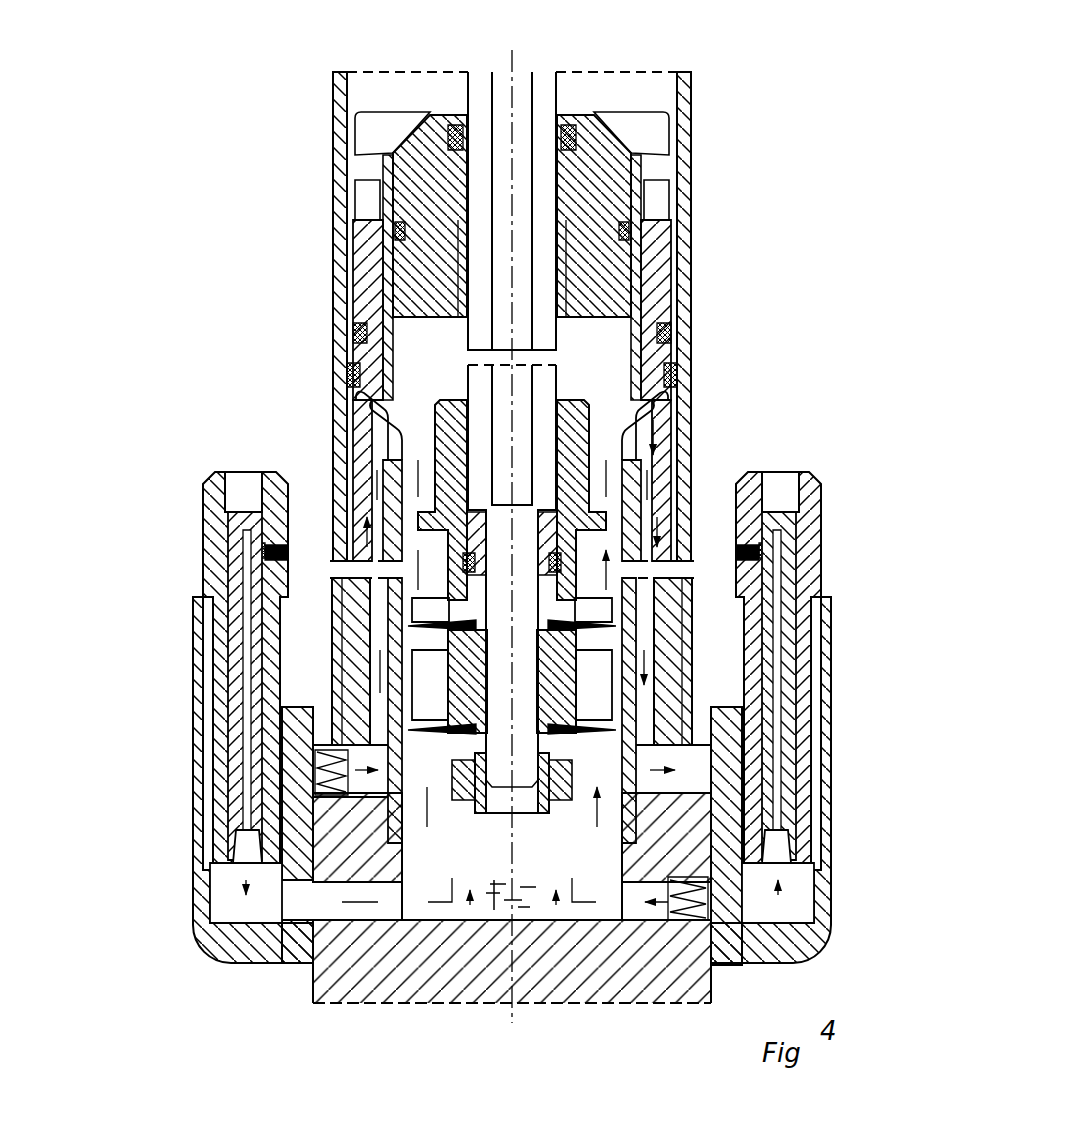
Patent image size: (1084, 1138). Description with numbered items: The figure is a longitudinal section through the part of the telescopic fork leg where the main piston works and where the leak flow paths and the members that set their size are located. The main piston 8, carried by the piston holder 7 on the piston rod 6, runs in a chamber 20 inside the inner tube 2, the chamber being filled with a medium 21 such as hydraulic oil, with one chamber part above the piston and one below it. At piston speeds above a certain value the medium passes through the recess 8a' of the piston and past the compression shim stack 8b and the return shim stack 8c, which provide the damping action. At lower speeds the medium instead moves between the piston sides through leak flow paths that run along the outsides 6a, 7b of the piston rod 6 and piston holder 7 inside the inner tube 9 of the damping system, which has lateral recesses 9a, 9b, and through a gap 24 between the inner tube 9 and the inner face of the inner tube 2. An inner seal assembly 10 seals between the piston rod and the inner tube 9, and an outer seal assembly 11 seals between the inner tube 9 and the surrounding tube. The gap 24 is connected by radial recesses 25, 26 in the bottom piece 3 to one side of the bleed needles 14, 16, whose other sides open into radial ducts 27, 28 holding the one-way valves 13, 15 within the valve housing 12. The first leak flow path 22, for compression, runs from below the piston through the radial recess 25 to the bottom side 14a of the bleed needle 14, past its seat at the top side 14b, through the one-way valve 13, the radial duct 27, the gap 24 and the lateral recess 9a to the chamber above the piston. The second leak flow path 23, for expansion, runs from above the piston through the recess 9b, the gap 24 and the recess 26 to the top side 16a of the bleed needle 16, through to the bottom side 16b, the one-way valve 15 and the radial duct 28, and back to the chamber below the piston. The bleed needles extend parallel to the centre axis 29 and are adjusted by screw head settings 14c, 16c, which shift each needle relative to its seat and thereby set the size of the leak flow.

The inner tube 2 is at (697, 163).
The bottom piece 3 is at (308, 985).
The piston rod 6 is at (460, 87).
The outside of the piston rod 6a is at (457, 372).
The piston holder 7 is at (447, 412).
The outside of the piston holder 7b is at (440, 445).
The main piston 8 is at (440, 688).
The recess of the piston 8a' is at (336, 646).
The stack of compression shims 8b is at (583, 612).
The stack of return shims 8c is at (376, 720).
The inner tube of the damping system 9 is at (392, 512).
The lateral recess 9a is at (392, 455).
The lateral recess 9b is at (590, 352).
The inner seal assembly 10 is at (397, 135).
The outer seal assembly 11 is at (668, 236).
The valve housing 12 is at (200, 950).
The one-way valve 13 is at (310, 770).
The bleed needle 14 is at (228, 875).
The bottom side of the bleed needle 14a is at (223, 902).
The top side of the bleed needle 14b is at (233, 857).
The screw head setting 14c is at (210, 478).
The one-way valve 15 is at (717, 903).
The bleed needle 16 is at (800, 848).
The top side of the bleed needle 16a is at (797, 855).
The bottom side of the bleed needle 16b is at (787, 877).
The screw head setting 16c is at (815, 478).
The chamber 20 is at (655, 312).
The medium 21 is at (493, 905).
The first leak flow path 22 is at (235, 903).
The second leak flow path 23 is at (660, 425).
The gap 24 is at (375, 735).
The radial recess 25 is at (357, 924).
The radial recess 26 is at (665, 800).
The radial duct 27 is at (368, 800).
The radial duct 28 is at (645, 927).
The centre axis 29 is at (515, 52).